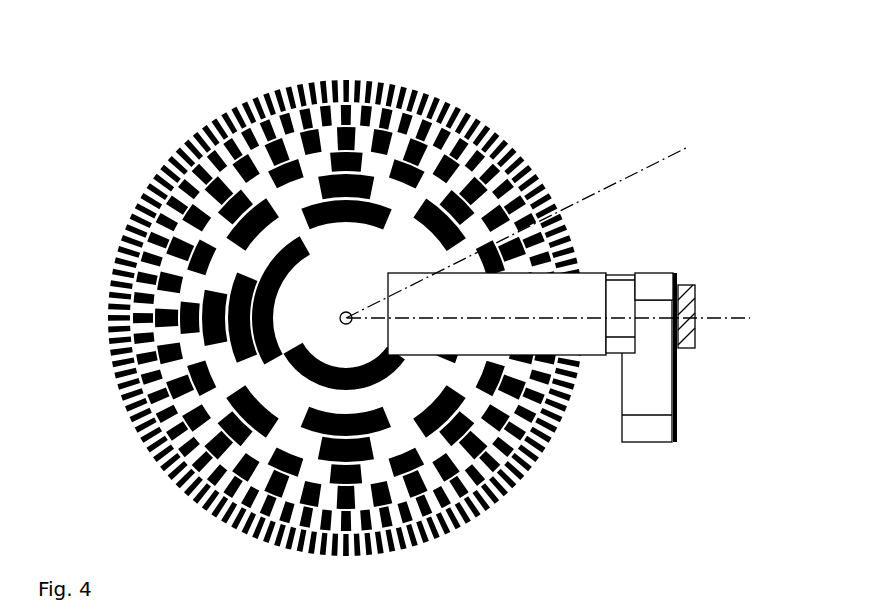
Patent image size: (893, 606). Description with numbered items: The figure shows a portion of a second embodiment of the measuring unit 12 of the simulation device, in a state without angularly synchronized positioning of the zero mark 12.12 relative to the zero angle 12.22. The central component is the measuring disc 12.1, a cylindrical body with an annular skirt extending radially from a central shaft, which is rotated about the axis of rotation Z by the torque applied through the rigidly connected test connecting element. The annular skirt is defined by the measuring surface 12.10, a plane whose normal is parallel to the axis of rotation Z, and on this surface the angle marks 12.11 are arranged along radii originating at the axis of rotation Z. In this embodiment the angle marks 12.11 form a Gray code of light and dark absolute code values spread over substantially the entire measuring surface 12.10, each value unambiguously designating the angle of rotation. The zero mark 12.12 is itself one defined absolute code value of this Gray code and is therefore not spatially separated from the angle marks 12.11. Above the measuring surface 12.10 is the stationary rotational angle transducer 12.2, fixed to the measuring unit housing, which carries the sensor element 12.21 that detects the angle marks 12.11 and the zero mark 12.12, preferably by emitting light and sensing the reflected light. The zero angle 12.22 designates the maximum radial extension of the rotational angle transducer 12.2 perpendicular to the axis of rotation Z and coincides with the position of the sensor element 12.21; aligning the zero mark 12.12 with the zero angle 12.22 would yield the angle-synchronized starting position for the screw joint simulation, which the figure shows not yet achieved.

The measuring unit 12 is at (412, 274).
The measuring disc 12.1 is at (369, 274).
The measuring surface 12.10 is at (323, 408).
The angle marks 12.11 is at (493, 150).
The zero mark 12.12 is at (394, 100).
The rotational angle transducer 12.2 is at (592, 350).
The sensor element 12.21 is at (532, 347).
The zero angle 12.22 is at (736, 300).
The axis of rotation Z is at (349, 312).